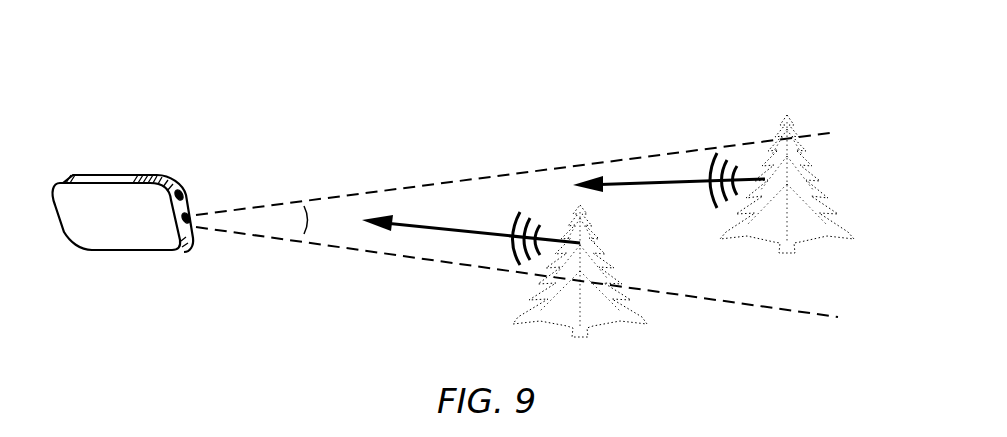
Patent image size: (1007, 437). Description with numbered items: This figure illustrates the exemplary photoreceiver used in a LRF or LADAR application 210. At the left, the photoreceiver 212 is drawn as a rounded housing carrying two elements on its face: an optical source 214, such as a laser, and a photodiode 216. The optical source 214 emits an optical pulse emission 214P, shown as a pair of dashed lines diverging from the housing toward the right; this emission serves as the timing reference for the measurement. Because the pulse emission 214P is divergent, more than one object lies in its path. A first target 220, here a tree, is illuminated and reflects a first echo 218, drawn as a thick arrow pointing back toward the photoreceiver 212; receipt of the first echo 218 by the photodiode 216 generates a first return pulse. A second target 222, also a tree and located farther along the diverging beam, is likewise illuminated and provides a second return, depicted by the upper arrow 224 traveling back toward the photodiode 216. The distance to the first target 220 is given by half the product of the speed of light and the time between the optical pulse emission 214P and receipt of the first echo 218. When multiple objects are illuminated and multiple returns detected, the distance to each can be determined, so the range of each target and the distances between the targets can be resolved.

The LRF or LADAR application 210 is at (323, 108).
The photoreceiver 212 is at (104, 172).
The optical source 214 is at (188, 226).
The optical pulse emission 214P is at (358, 250).
The photodiode 216 is at (179, 192).
The first echo 218 is at (445, 230).
The first target 220 is at (640, 318).
The second target 222 is at (840, 196).
The signal from far tree 224 is at (658, 182).